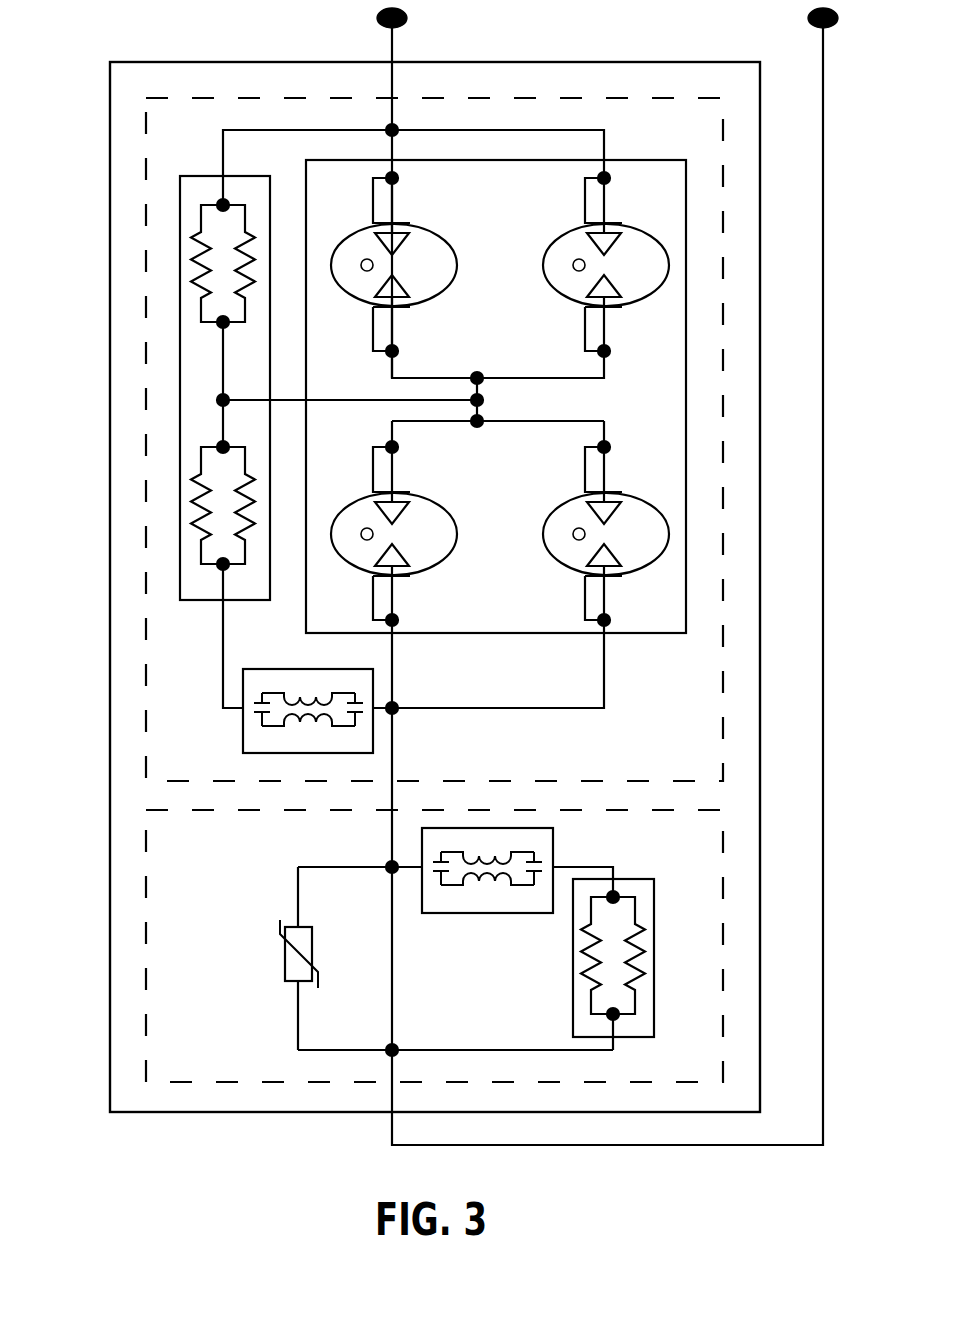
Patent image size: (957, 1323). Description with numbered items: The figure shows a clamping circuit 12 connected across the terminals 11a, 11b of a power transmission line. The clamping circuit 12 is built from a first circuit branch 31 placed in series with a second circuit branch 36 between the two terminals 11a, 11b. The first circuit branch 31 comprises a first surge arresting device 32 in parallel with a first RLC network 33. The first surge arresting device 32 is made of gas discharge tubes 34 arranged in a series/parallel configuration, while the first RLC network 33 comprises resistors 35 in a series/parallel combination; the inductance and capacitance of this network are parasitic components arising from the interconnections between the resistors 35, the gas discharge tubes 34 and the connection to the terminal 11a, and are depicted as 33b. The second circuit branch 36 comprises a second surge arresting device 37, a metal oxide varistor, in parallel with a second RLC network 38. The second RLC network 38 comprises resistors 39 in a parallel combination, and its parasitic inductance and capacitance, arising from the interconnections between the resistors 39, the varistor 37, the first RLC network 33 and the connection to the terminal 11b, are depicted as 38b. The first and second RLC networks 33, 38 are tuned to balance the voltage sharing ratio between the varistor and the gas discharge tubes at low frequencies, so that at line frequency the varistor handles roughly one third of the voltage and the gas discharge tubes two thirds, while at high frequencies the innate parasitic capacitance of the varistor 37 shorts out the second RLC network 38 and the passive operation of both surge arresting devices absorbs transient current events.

The terminal 11a is at (369, 193).
The terminal 11b is at (637, 576).
The clamping circuit 12 is at (622, 62).
The first circuit branch 31 is at (145, 422).
The first surge arresting device 32 is at (496, 375).
The first RLC network 33 is at (166, 364).
The parasitic L and C components of first RLC network 33b is at (243, 730).
The gas discharge tube 34 is at (638, 227).
The resistor 35 is at (200, 252).
The second circuit branch 36 is at (145, 910).
The second surge arresting device 37 is at (314, 953).
The second RLC network 38 is at (644, 943).
The parasitic L and C components of second RLC network 38b is at (485, 914).
The resistor 39 is at (637, 957).